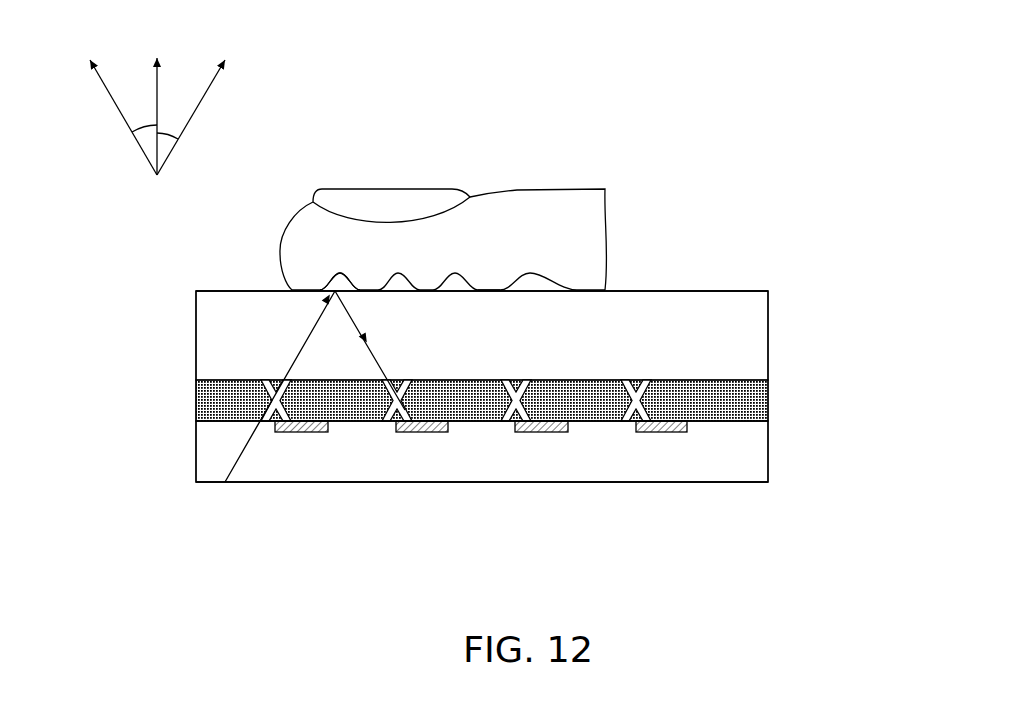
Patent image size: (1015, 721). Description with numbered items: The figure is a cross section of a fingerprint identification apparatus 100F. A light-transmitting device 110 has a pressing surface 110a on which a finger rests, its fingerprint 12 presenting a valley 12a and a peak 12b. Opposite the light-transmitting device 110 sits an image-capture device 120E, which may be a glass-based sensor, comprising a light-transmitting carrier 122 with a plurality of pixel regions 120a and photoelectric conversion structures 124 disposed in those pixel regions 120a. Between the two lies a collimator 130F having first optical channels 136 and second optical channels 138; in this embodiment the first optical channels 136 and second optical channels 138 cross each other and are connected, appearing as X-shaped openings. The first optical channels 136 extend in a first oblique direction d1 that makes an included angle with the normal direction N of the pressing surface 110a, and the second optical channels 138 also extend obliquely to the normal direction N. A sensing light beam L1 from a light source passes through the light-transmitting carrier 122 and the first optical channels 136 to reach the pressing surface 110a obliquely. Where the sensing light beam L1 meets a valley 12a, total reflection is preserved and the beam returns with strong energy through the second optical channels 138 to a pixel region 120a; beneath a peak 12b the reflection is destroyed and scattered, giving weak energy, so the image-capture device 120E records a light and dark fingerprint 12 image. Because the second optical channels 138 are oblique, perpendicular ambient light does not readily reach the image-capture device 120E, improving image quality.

The fingerprint identification apparatus 100F is at (1001, 591).
The fingerprint 12 is at (488, 153).
The valley 12a is at (334, 280).
The peak 12b is at (494, 296).
The light-transmitting device 110 is at (779, 291).
The pressing surface 110a is at (753, 289).
The collimator 130F is at (779, 380).
The first optical channels 136 is at (262, 410).
The second optical channels 138 is at (412, 412).
The image-capture device 120E is at (779, 421).
The pixel region 120a is at (422, 436).
The light-transmitting carrier 122 is at (736, 467).
The photoelectric conversion structures 124 is at (437, 430).
The sensing light beam L1 is at (224, 481).
The normal direction N is at (160, 76).
The first oblique direction d1 is at (107, 90).